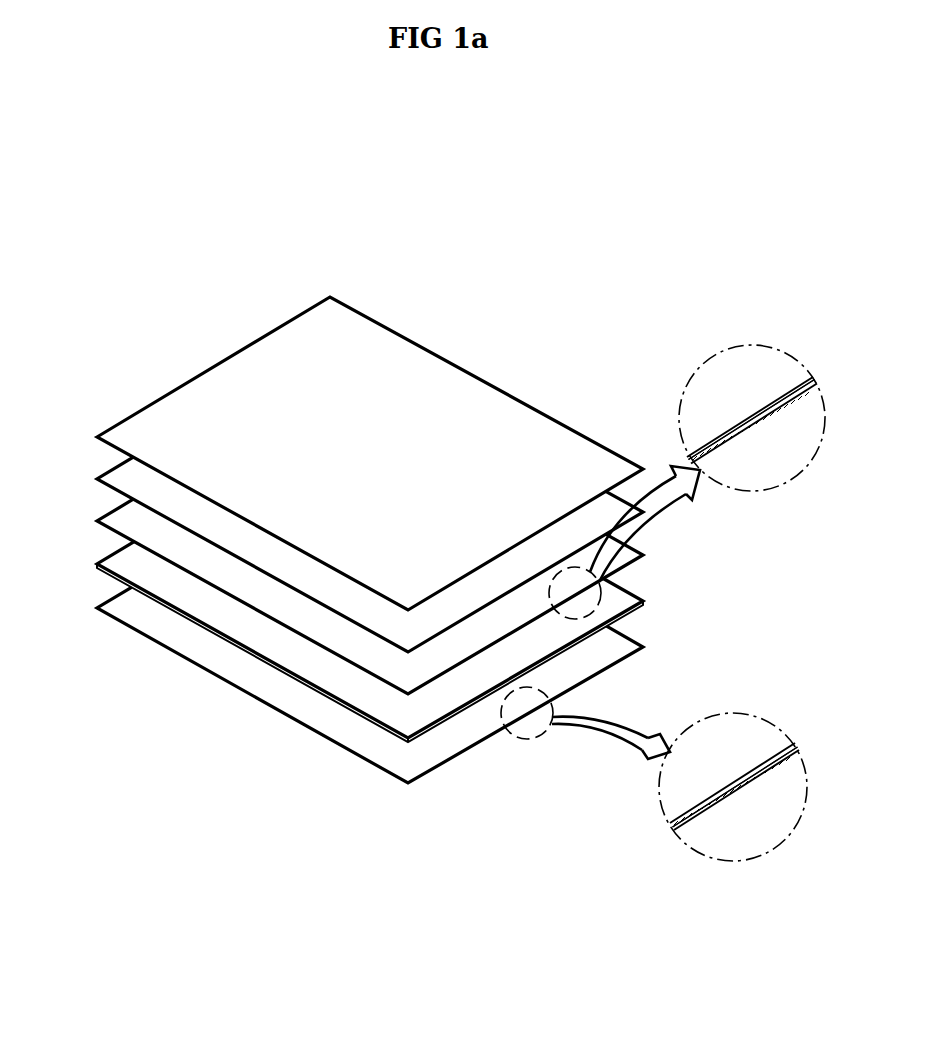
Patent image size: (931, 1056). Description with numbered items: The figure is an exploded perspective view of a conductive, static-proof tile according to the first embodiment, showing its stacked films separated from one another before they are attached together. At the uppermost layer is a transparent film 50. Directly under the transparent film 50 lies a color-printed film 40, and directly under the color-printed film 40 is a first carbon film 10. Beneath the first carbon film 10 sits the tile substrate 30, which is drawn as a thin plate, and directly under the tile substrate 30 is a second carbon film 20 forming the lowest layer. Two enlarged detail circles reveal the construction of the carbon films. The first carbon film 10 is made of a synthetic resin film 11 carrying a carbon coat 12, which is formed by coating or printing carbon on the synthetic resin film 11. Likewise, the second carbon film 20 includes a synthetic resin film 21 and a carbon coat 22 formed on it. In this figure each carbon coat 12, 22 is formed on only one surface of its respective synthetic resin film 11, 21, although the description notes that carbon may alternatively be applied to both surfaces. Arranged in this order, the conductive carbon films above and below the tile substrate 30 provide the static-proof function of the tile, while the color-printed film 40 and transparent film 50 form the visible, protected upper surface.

The first carbon film 10 is at (119, 512).
The synthetic resin film 11 is at (690, 448).
The carbon coat 12 is at (708, 456).
The second carbon film 20 is at (130, 620).
The synthetic resin film 21 is at (686, 824).
The carbon coat 22 is at (668, 814).
The tile substrate 30 is at (119, 556).
The color-printed film 40 is at (119, 470).
The transparent film 50 is at (142, 416).